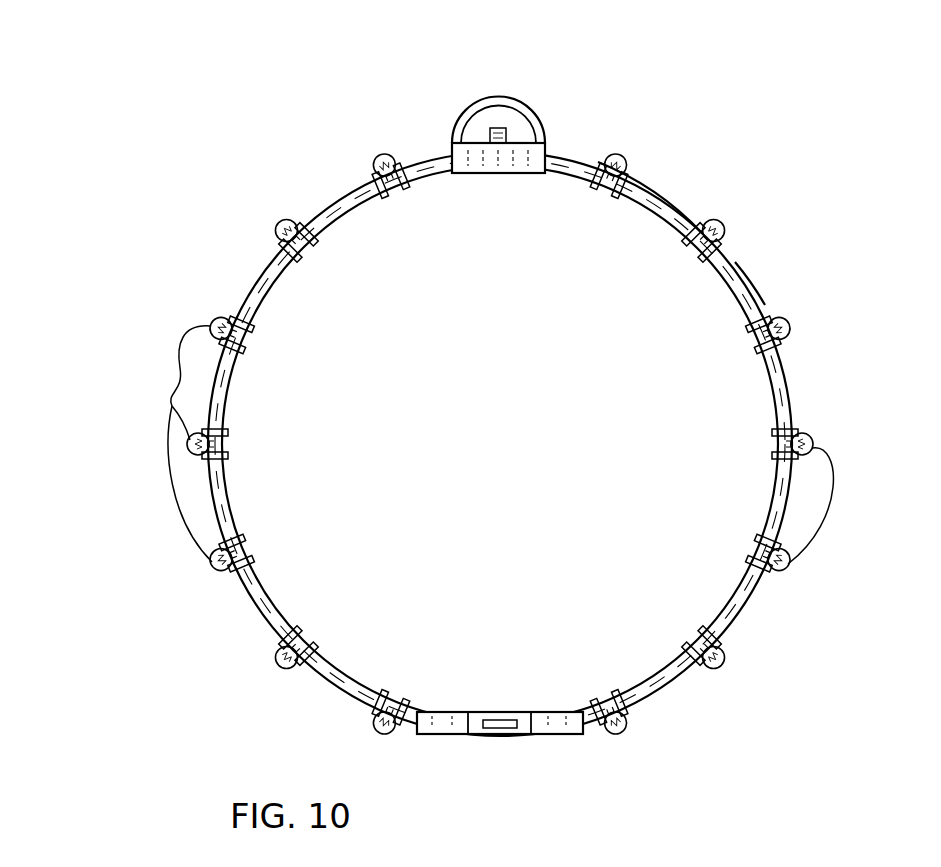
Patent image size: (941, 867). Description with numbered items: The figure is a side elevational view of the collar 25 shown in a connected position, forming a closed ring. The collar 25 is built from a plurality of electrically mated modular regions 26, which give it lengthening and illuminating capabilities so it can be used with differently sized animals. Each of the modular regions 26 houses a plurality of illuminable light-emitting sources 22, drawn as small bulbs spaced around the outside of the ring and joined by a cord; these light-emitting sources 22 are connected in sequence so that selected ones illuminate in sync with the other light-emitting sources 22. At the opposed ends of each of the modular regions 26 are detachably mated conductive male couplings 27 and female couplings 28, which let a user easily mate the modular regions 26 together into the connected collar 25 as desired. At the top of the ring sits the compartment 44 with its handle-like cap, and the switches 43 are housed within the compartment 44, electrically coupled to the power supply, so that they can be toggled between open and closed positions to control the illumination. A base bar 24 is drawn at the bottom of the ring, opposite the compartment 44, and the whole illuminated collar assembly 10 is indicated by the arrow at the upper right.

The lighted ring assembly 10 is at (805, 130).
The illuminable light-emitting sources 22 is at (172, 406).
The collar 25 is at (657, 692).
The modular regions 26 is at (663, 212).
The male coupling 27 is at (735, 276).
The female coupling 28 is at (755, 306).
The switches 43 is at (505, 135).
The compartment 44 is at (543, 176).
The bottom base bar 24 is at (500, 723).